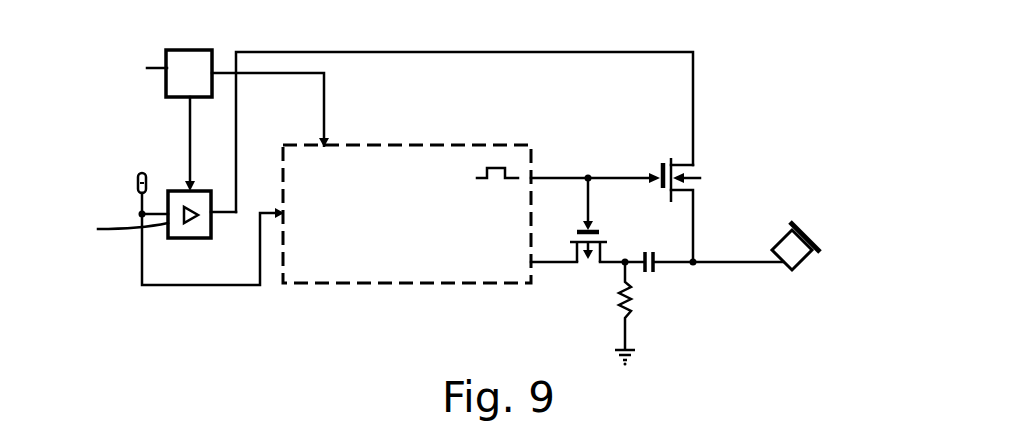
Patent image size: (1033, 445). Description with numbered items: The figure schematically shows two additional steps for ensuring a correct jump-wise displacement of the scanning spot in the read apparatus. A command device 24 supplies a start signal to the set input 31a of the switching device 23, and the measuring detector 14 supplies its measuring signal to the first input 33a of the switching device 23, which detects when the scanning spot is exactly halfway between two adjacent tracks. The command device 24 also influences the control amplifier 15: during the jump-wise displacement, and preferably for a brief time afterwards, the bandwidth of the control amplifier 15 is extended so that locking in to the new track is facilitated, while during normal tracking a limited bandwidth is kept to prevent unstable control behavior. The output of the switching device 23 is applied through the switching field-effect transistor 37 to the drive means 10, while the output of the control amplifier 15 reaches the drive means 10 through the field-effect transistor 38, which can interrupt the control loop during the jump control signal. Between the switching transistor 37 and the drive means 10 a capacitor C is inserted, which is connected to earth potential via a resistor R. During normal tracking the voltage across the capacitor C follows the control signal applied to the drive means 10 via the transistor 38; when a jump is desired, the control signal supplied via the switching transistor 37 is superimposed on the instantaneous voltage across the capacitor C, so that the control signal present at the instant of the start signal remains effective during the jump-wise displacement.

The command device 24 is at (192, 61).
The measuring detector 14 is at (146, 183).
The control amplifier 15 is at (195, 230).
The switching device 23 is at (460, 286).
The set input 31a is at (324, 149).
The first input 33a is at (285, 213).
The field-effect transistor 37 is at (598, 237).
The field-effect transistor 38 is at (663, 165).
The capacitor C is at (654, 273).
The resistor R is at (632, 300).
The drive means 10 is at (795, 264).